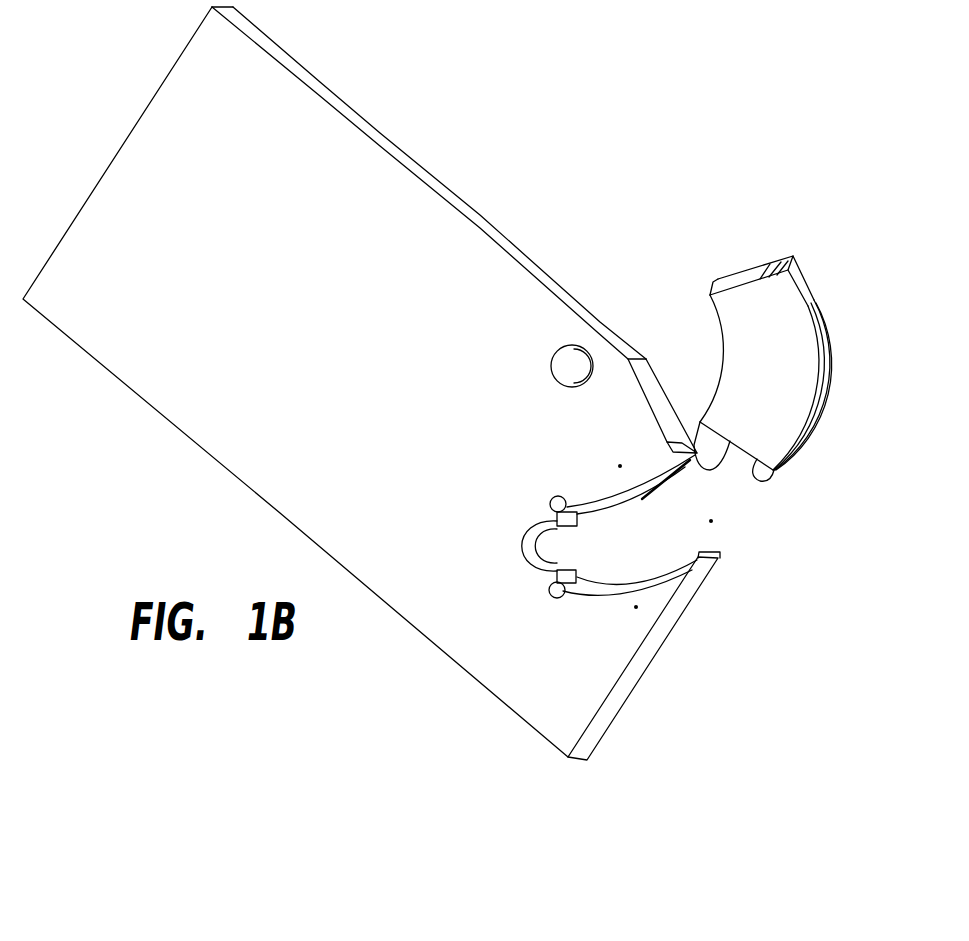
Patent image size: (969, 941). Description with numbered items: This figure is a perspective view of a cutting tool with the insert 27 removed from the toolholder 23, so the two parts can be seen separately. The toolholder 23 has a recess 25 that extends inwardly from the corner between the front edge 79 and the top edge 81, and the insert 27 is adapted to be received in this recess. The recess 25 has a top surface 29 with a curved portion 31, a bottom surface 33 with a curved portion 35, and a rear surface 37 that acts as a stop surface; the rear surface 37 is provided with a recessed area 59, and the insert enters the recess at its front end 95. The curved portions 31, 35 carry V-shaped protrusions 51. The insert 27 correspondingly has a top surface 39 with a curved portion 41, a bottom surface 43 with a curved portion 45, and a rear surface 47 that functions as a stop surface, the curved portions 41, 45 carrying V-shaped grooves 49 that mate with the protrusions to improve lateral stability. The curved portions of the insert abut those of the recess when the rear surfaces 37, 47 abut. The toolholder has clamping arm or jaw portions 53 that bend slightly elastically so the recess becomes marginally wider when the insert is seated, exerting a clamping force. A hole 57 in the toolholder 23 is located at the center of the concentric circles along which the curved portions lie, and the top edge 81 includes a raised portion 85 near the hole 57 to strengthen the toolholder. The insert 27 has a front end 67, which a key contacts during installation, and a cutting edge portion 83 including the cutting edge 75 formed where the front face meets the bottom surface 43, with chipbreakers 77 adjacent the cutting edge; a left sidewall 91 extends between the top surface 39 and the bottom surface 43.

The toolholder 23 is at (345, 158).
The recess 25 is at (621, 556).
The insert 27 is at (752, 262).
The top surface 29 is at (634, 506).
The curved portion 31 is at (660, 483).
The bottom surface 33 is at (623, 584).
The curved portion 35 is at (685, 553).
The rear surface 37 is at (560, 575).
The top surface 39 is at (719, 376).
The curved portion 41 is at (715, 305).
The bottom surface 43 is at (824, 385).
The curved portion 45 is at (819, 360).
The rear surface 47 is at (765, 478).
The V-shaped grooves 49 is at (817, 317).
The V-shaped protrusions 51 is at (720, 440).
The clamping arm or jaw portion 53 is at (620, 466).
The hole 57 is at (578, 360).
The recessed area 59 is at (543, 545).
The front end 67 is at (730, 280).
The cutting edge 75 is at (797, 262).
The chipbreakers 77 is at (778, 260).
The front edge 79 is at (590, 732).
The top edge 81 is at (527, 254).
The cutting edge portion 83 is at (777, 285).
The raised portion 85 is at (500, 232).
The left sidewall 91 is at (755, 377).
The front end 95 is at (712, 521).